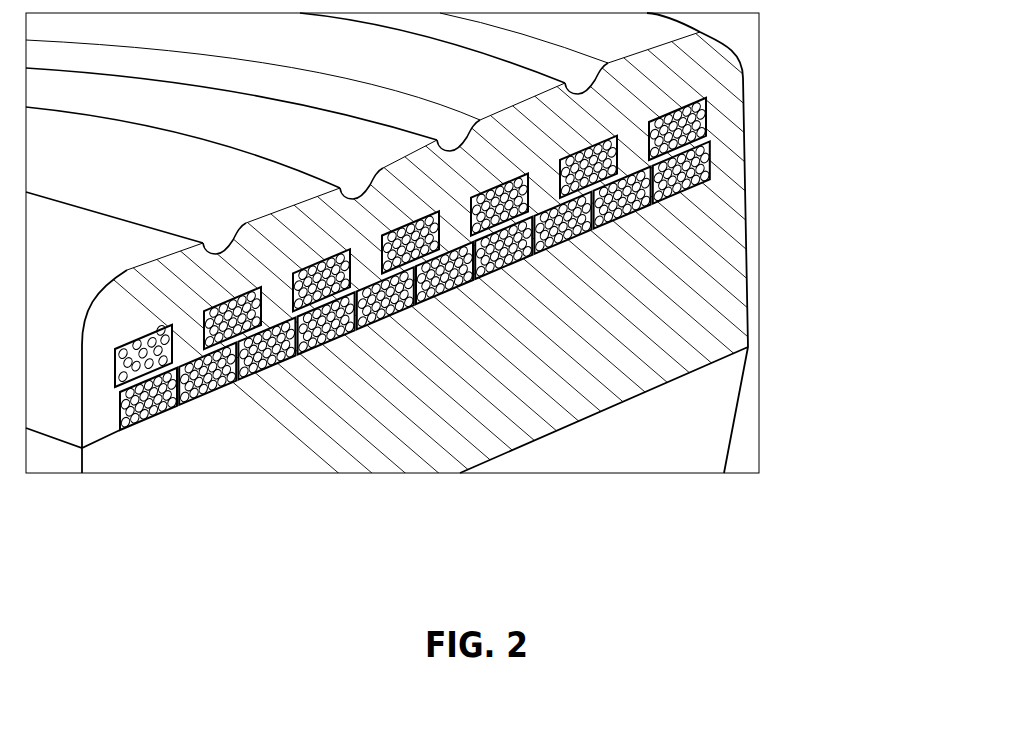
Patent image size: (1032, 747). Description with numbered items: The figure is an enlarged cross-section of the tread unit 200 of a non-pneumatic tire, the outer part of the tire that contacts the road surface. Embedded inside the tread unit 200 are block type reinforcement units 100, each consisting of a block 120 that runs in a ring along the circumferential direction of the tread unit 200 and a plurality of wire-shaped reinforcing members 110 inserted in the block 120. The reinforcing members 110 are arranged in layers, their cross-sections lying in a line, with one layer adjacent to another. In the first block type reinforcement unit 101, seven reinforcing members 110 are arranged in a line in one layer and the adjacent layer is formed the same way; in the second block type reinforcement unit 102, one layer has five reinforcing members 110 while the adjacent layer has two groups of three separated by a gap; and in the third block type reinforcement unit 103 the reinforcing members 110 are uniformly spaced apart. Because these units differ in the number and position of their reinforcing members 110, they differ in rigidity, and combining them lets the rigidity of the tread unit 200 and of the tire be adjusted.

The block type reinforcement unit 100 is at (786, 107).
The reinforcing member 110 is at (708, 115).
The block 120 is at (708, 95).
The first block type reinforcement unit 101 is at (353, 320).
The second block type reinforcement unit 102 is at (233, 312).
The third block type reinforcement unit 103 is at (140, 362).
The tread unit 200 is at (723, 315).